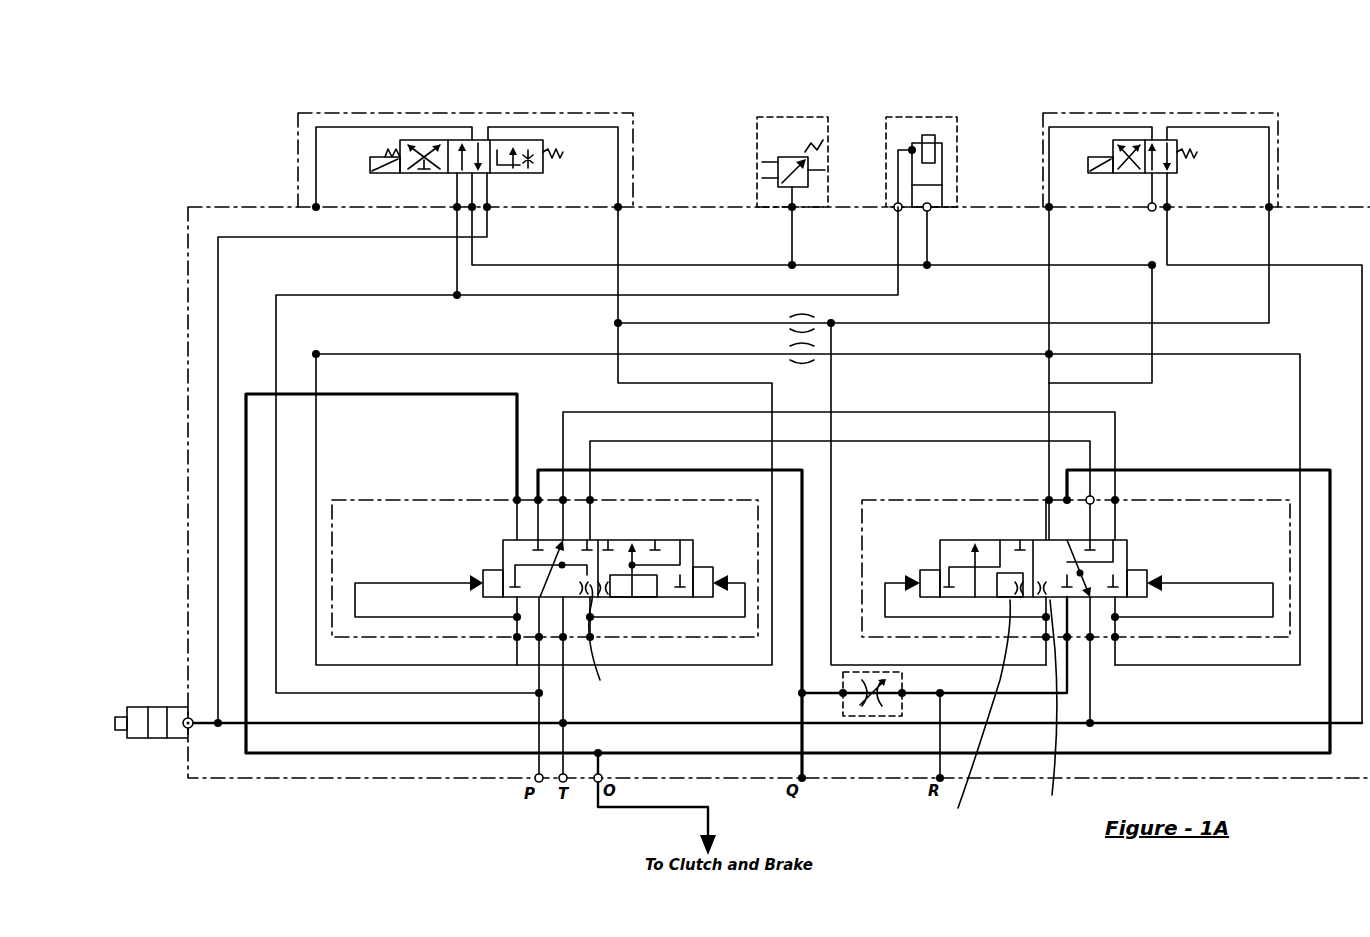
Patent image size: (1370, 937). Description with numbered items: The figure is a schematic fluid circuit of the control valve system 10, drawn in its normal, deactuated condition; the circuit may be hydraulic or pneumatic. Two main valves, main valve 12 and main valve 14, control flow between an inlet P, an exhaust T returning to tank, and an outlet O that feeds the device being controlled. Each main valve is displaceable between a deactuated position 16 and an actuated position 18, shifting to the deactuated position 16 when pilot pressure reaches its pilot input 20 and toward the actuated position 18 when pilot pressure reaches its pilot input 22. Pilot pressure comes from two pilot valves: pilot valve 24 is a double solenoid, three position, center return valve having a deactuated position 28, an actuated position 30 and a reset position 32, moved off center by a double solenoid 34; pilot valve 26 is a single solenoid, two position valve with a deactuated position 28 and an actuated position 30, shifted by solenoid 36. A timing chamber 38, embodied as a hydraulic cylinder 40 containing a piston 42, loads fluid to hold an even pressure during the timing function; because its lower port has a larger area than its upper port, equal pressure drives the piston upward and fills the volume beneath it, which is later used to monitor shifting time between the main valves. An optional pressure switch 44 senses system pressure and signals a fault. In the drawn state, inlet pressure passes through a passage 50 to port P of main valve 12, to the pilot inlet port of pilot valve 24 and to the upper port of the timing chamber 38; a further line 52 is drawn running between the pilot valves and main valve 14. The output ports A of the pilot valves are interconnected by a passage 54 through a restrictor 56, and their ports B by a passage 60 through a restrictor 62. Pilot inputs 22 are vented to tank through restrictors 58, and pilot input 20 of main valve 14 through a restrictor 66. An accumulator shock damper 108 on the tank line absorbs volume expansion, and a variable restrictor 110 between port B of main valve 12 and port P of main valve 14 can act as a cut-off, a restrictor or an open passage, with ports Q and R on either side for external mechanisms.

The control valve system 10 is at (1315, 150).
The main valve 12 is at (802, 628).
The main valve 14 is at (1076, 646).
The deactuated position 16 is at (498, 545).
The actuated position 18 is at (695, 540).
The pilot input 20 is at (480, 578).
The pilot input 22 is at (710, 578).
The pilot valve 24 is at (755, 130).
The pilot valve 26 is at (1160, 144).
The deactuated position 28 is at (487, 140).
The actuated position 30 is at (412, 140).
The reset position 32 is at (535, 170).
The double solenoid 34 is at (370, 157).
The solenoid 36 is at (1088, 160).
The timing chamber 38 is at (947, 170).
The hydraulic cylinder 40 is at (945, 197).
The piston 42 is at (937, 175).
The pressure switch 44 is at (757, 135).
The passage 50 is at (370, 297).
The control line 52 is at (1120, 383).
The passage 54 is at (910, 354).
The restrictor 56 is at (802, 365).
The restrictor 58 is at (826, 704).
The passage 60 is at (658, 323).
The restrictor 62 is at (810, 322).
The restrictor 66 is at (977, 719).
The accumulator shock damper 108 is at (155, 740).
The variable restrictor 110 is at (875, 716).